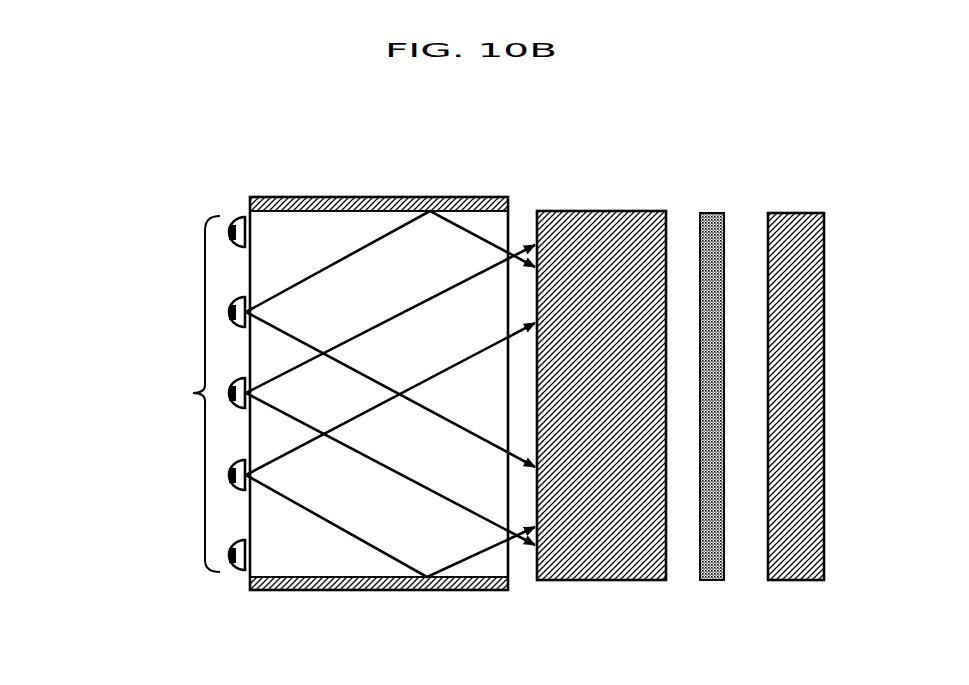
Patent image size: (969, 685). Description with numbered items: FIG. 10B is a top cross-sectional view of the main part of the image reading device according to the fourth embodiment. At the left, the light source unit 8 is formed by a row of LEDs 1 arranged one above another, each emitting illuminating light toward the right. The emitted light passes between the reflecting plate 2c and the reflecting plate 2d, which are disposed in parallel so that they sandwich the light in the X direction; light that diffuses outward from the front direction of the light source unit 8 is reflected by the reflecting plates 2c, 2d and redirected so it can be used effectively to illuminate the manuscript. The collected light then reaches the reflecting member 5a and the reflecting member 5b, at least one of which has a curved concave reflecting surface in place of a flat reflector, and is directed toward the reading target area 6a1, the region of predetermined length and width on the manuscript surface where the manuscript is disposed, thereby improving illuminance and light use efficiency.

The LED 1 is at (232, 217).
The light source unit 8 is at (140, 373).
The reflecting plate 2c is at (270, 197).
The reflecting plate 2d is at (265, 590).
The reflecting member 5a is at (603, 211).
The reflecting member 5b is at (803, 580).
The reading target area 6a1 is at (712, 213).